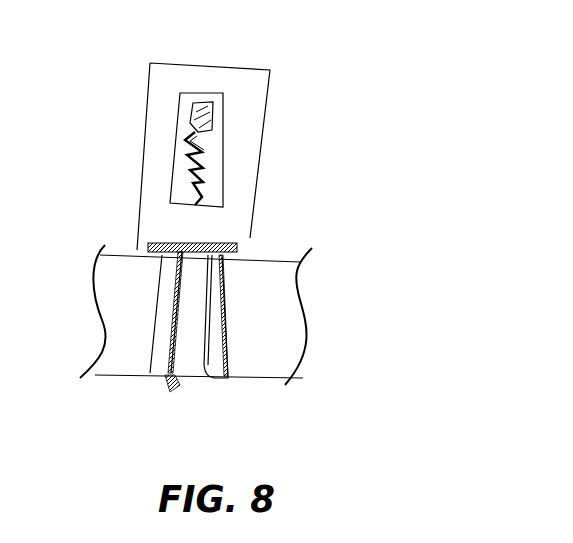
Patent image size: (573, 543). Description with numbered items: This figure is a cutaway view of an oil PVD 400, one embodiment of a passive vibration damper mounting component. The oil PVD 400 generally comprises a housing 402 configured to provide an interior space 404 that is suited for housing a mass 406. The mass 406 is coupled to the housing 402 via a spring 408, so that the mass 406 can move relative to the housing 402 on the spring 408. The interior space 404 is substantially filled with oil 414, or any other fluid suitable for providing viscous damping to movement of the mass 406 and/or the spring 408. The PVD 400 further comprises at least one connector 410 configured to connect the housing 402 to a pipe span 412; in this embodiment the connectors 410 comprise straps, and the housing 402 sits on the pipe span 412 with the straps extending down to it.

The oil PVD 400 is at (413, 101).
The housing 402 is at (148, 185).
The interior space 404 is at (291, 150).
The mass 406 is at (212, 113).
The spring 408 is at (206, 170).
The connector 410 is at (160, 375).
The pipe span 412 is at (277, 338).
The oil 414 is at (213, 155).